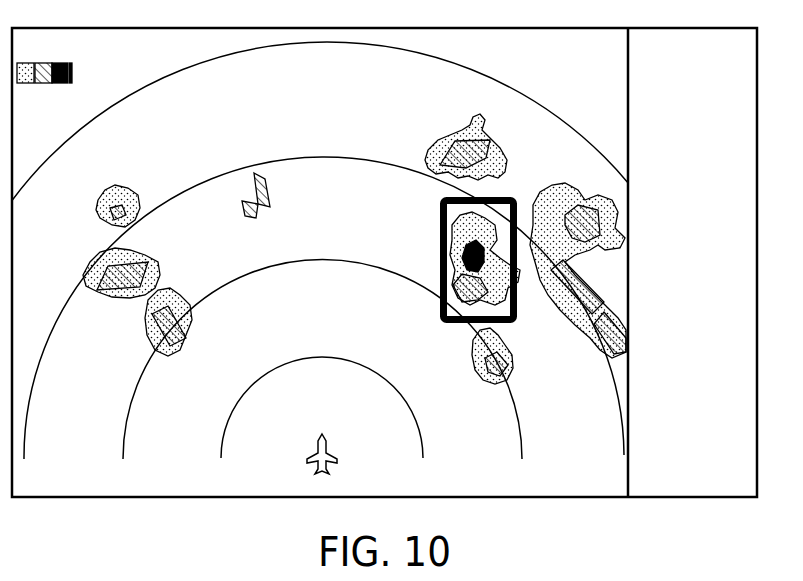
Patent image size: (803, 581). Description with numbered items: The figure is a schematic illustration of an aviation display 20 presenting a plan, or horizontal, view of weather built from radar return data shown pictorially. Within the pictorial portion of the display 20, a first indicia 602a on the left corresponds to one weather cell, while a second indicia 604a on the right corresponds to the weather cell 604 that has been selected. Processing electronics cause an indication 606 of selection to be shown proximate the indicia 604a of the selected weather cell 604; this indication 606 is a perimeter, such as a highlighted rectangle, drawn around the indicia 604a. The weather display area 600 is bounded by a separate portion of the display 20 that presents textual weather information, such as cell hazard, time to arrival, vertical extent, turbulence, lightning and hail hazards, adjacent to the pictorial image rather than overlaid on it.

The display 20 is at (72, 497).
The weather radar display area 600 is at (515, 40).
The first indicia 602a is at (152, 340).
The weather cell 604 is at (673, 40).
The second indicia 604a is at (441, 242).
The indication of selection 606 is at (500, 198).